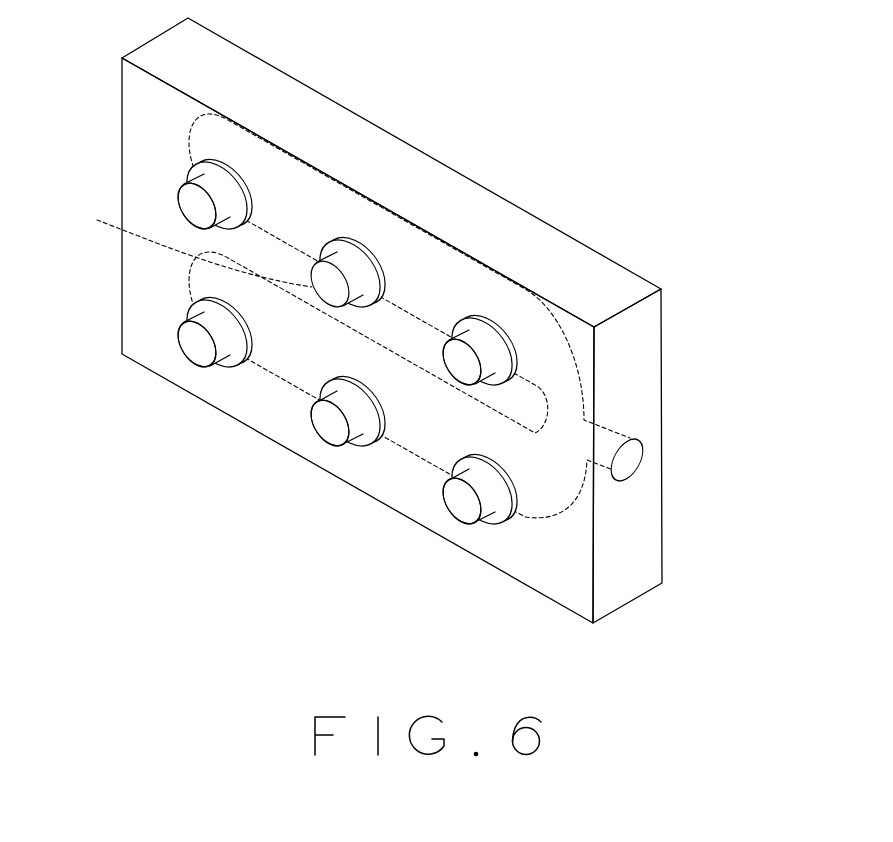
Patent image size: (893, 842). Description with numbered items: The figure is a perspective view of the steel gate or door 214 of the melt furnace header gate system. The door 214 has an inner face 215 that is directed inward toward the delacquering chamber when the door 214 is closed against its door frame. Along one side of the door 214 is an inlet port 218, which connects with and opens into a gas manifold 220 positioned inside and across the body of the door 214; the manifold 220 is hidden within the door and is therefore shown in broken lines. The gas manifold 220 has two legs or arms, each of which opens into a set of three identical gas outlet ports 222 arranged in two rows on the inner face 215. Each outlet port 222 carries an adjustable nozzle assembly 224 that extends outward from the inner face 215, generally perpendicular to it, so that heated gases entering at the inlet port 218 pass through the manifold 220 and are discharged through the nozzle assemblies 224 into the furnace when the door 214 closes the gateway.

The door 214 is at (585, 245).
The inner face 215 is at (157, 343).
The inlet port 218 is at (645, 446).
The gas manifold 220 is at (538, 348).
The gas outlet ports 222 is at (243, 177).
The adjustable nozzle assembly 224 is at (196, 231).